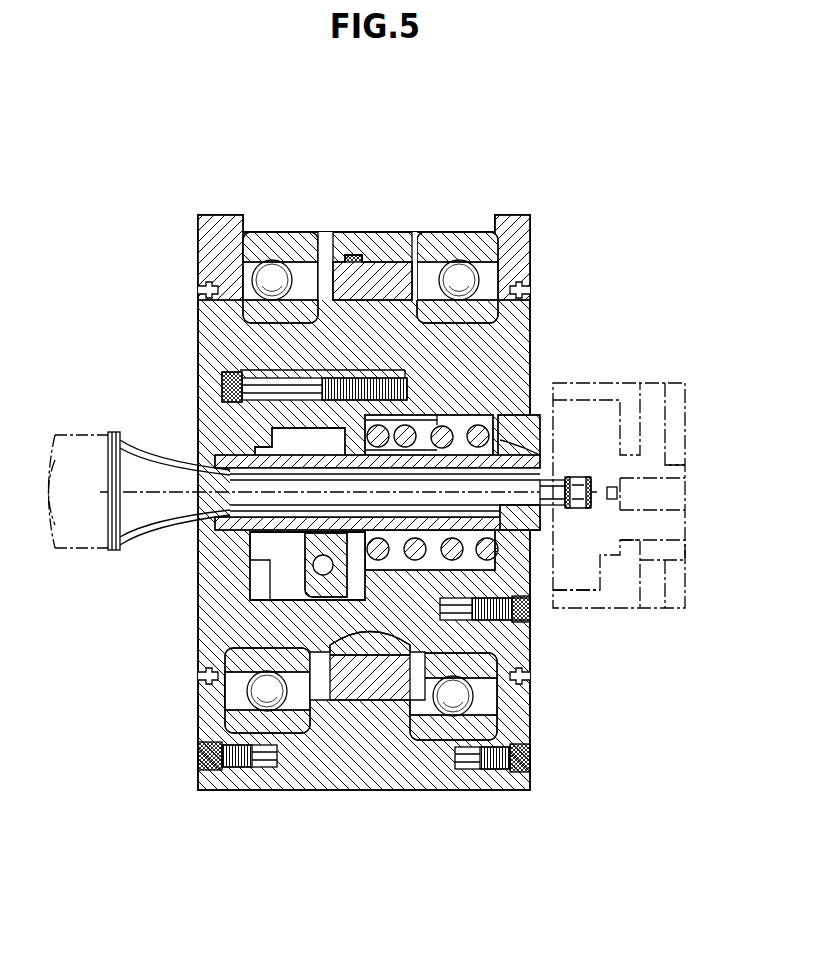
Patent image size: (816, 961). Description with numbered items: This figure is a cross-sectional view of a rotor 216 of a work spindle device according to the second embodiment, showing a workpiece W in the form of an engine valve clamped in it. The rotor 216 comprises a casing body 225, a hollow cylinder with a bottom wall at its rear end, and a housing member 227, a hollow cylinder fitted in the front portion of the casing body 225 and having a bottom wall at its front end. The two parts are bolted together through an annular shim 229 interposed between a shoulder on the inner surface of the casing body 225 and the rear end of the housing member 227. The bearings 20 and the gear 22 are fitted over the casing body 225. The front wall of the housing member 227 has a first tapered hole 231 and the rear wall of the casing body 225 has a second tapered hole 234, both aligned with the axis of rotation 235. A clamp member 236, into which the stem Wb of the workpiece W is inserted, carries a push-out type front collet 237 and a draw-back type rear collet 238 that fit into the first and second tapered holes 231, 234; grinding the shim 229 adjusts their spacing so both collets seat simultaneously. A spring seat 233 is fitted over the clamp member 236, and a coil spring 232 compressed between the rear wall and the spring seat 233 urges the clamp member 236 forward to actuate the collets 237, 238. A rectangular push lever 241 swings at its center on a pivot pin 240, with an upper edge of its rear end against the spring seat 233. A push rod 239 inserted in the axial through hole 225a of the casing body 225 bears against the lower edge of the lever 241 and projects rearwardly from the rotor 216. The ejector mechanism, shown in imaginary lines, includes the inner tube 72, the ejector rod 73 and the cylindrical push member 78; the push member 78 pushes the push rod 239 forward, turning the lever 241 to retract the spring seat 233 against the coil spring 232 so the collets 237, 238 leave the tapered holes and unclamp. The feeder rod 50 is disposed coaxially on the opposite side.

The rotor 216 is at (142, 742).
The casing body 225 is at (500, 355).
The axial through hole 225a is at (530, 640).
The annular shim 229 is at (374, 378).
The housing member 227 is at (232, 400).
The spring seat 233 is at (428, 412).
The coil spring 232 is at (495, 415).
The front collet 237 is at (232, 462).
The first tapered hole 231 is at (225, 520).
The clamp member 236 is at (311, 470).
The pivot pin 240 is at (300, 585).
The rectangular push lever 241 is at (300, 563).
The push rod 239 is at (538, 605).
The rear collet 238 is at (530, 560).
The second tapered hole 234 is at (540, 478).
The axis of rotation 235 is at (595, 478).
The stem Wb is at (528, 432).
The workpiece W is at (116, 508).
The feeder rod 50 is at (95, 433).
The ejector rod 73 is at (675, 485).
The inner tube 72 is at (672, 610).
The cylindrical push member 78 is at (618, 610).
The bearings 20 is at (289, 768).
The gear 22 is at (372, 700).